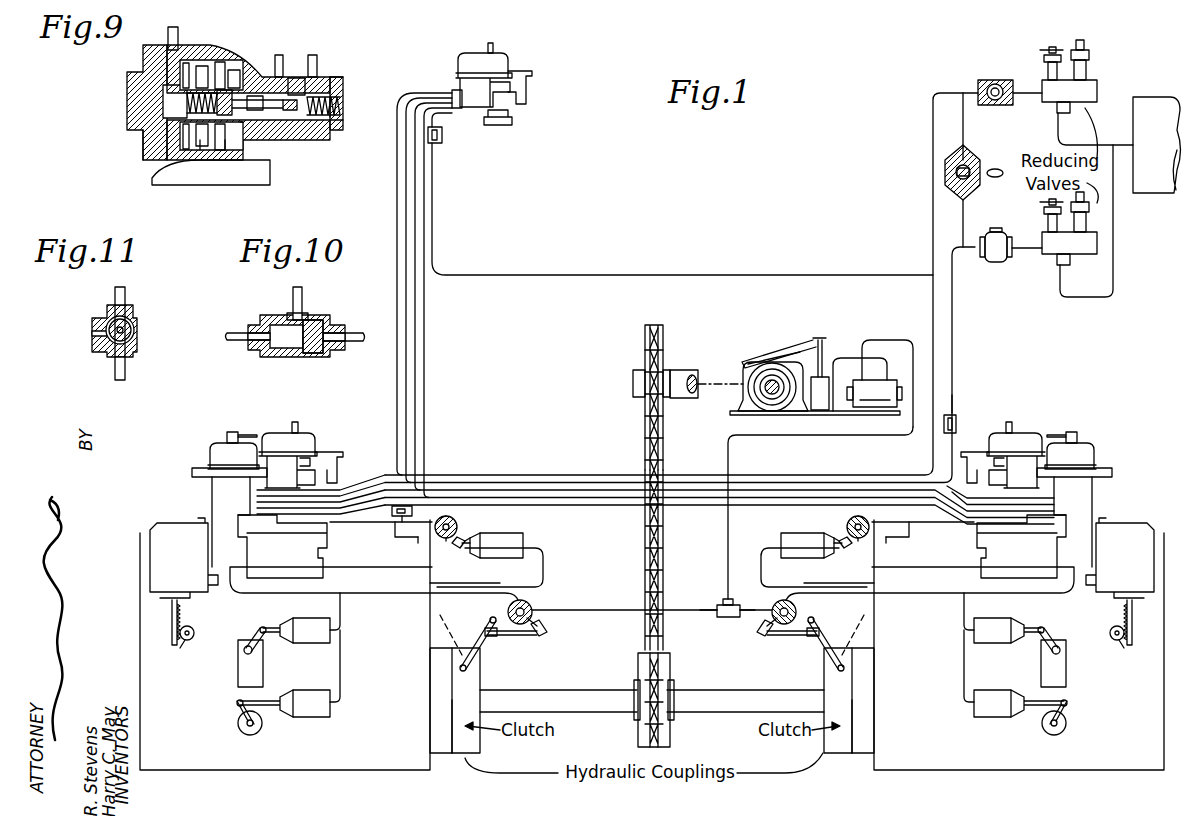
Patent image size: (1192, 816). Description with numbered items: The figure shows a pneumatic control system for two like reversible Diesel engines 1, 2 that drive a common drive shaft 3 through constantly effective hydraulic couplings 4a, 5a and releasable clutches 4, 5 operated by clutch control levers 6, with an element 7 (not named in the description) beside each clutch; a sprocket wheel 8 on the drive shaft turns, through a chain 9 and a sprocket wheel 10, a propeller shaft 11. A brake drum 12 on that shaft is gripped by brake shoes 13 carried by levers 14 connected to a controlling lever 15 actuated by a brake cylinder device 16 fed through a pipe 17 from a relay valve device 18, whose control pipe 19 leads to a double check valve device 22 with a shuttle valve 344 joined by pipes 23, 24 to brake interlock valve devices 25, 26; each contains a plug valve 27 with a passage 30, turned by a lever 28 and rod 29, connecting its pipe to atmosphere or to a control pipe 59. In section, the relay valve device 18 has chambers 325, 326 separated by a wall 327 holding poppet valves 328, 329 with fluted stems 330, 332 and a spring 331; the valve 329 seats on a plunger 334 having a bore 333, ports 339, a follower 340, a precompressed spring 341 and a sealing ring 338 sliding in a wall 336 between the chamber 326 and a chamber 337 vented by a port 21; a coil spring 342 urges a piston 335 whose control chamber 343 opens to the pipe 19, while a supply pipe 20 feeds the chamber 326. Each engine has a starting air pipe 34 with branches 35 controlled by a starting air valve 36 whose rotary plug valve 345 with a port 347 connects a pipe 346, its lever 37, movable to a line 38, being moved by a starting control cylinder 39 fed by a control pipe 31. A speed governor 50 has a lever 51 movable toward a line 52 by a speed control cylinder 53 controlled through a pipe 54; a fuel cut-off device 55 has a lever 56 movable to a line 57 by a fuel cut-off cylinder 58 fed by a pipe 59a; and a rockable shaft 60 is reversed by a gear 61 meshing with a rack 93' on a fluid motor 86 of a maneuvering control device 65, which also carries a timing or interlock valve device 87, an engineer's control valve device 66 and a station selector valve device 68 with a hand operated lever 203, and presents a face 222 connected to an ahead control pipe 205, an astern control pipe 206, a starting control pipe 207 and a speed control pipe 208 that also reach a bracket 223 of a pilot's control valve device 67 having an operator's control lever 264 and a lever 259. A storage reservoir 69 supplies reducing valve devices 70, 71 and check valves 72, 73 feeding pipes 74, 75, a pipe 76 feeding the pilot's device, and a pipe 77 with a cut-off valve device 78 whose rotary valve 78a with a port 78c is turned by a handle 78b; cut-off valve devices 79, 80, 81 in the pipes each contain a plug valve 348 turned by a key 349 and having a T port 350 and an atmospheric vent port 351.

In FIG. 1, the internal combustion engine 1 is at (440, 762).
In FIG. 1, the internal combustion engine 2 is at (868, 766).
In FIG. 1, the common drive shaft 3 is at (740, 713).
In FIG. 1, the releasable clutch 4 is at (478, 748).
In FIG. 1, the hydraulic coupling 4a is at (448, 722).
In FIG. 1, the releasable clutch 5 is at (823, 748).
In FIG. 1, the hydraulic coupling 5a is at (848, 740).
In FIG. 1, the clutch control lever 6 is at (485, 645).
In FIG. 1, the clutch housing 7 is at (455, 630).
In FIG. 1, the sprocket wheel 8 is at (671, 675).
In FIG. 1, the chain 9 is at (665, 536).
In FIG. 1, the sprocket wheel 10 is at (667, 340).
In FIG. 1, the propeller shaft 11 is at (695, 370).
In FIG. 1, the brake drum 12 is at (765, 411).
In FIG. 1, the brake shoes 13 is at (745, 395).
In FIG. 1, the levers 14 is at (800, 347).
In FIG. 1, the controlling lever 15 is at (818, 338).
In FIG. 1, the brake cylinder device 16 is at (828, 405).
In FIG. 9, the pipe 17 is at (279, 55).
In FIG. 1, the pipe 17 is at (845, 358).
In FIG. 9, the relay valve device 18 is at (155, 165).
In FIG. 1, the relay valve device 18 is at (890, 410).
In FIG. 9, the control pipe 19 is at (178, 30).
In FIG. 10, the control pipe 19 is at (302, 300).
In FIG. 1, the control pipe 19 is at (830, 436).
In FIG. 9, the fluid pressure supply pipe 20 is at (313, 55).
In FIG. 1, the fluid pressure supply pipe 20 is at (895, 357).
In FIG. 9, the port 21 is at (227, 90).
In FIG. 10, the double check valve device 22 is at (285, 348).
In FIG. 1, the double check valve device 22 is at (717, 612).
In FIG. 10, the pipe 23 is at (238, 342).
In FIG. 1, the pipe 23 is at (702, 612).
In FIG. 10, the pipe 24 is at (355, 342).
In FIG. 1, the pipe 24 is at (741, 612).
In FIG. 1, the brake interlock valve device 25 is at (533, 608).
In FIG. 1, the brake interlock valve device 26 is at (795, 608).
In FIG. 1, the rotary type plug valve 27 is at (512, 615).
In FIG. 1, the lever 28 is at (546, 634).
In FIG. 1, the rod 29 is at (522, 636).
In FIG. 1, the passage 30 is at (535, 617).
In FIG. 1, the control pipe 31 is at (532, 586).
In FIG. 1, the starting air pipe 34 is at (412, 512).
In FIG. 1, the branches 35 is at (424, 540).
In FIG. 1, the starting air valve 36 is at (455, 525).
In FIG. 1, the lever 37 is at (462, 548).
In FIG. 1, the dot and dash line 38 is at (446, 538).
In FIG. 1, the starting control cylinder 39 is at (510, 533).
In FIG. 1, the speed governor 50 is at (238, 678).
In FIG. 1, the governor control lever 51 is at (262, 628).
In FIG. 1, the dot and dash line 52 is at (240, 648).
In FIG. 1, the speed control cylinder 53 is at (295, 643).
In FIG. 1, the pipe 54 is at (343, 612).
In FIG. 1, the fuel cut-off device 55 is at (252, 735).
In FIG. 1, the lever 56 is at (240, 710).
In FIG. 1, the dot and dash line 57 is at (262, 708).
In FIG. 1, the fuel cut-off cylinder 58 is at (318, 690).
In FIG. 1, the control pipe 59 is at (405, 593).
In FIG. 1, the pipe 59a is at (340, 675).
In FIG. 1, the rockable shaft 60 is at (190, 627).
In FIG. 1, the gear 61 is at (184, 640).
In FIG. 1, the maneuvering control device 65 is at (212, 505).
In FIG. 1, the engineer's control valve device 66 is at (305, 433).
In FIG. 1, the pilot's control valve device 67 is at (508, 60).
In FIG. 1, the station selector valve device 68 is at (215, 443).
In FIG. 1, the storage reservoir 69 is at (1150, 97).
In FIG. 1, the reducing valve device 70 is at (1095, 85).
In FIG. 1, the reducing valve device 71 is at (1082, 258).
In FIG. 1, the check valve 72 is at (985, 82).
In FIG. 1, the check valve 73 is at (1000, 263).
In FIG. 1, the pipe 74 is at (933, 298).
In FIG. 1, the pipe 75 is at (952, 320).
In FIG. 1, the pipe 76 is at (795, 275).
In FIG. 1, the pipe 77 is at (963, 130).
In FIG. 1, the cut-off valve device 78 is at (946, 177).
In FIG. 1, the rotary valve 78a is at (970, 185).
In FIG. 1, the handle 78b is at (995, 168).
In FIG. 1, the port 78c is at (960, 160).
In FIG. 11, the cut-off valve device 79 is at (130, 350).
In FIG. 1, the cut-off valve device 79 is at (958, 414).
In FIG. 1, the cut-off valve device 80 is at (392, 511).
In FIG. 1, the cut-off valve device 81 is at (442, 133).
In FIG. 1, the fluid motor 86 is at (150, 530).
In FIG. 1, the timing or interlock valve device 87 is at (303, 565).
In FIG. 1, the rack 93' is at (638, 622).
In FIG. 1, the hand operated lever 203 is at (234, 432).
In FIG. 1, the ahead control pipe 205 is at (547, 490).
In FIG. 1, the astern control pipe 206 is at (506, 482).
In FIG. 1, the starting control pipe 207 is at (470, 475).
In FIG. 1, the speed control pipe 208 is at (593, 497).
In FIG. 1, the face 222 is at (262, 480).
In FIG. 1, the bracket 223 is at (452, 92).
In FIG. 1, the lever 259 is at (533, 88).
In FIG. 1, the operator's control lever 264 is at (492, 47).
In FIG. 9, the chamber 325 is at (335, 75).
In FIG. 9, the chamber 326 is at (292, 112).
In FIG. 9, the wall 327 is at (295, 78).
In FIG. 9, the poppet valve 328 is at (340, 100).
In FIG. 9, the poppet valve 329 is at (335, 125).
In FIG. 9, the fluted stem 330 is at (338, 110).
In FIG. 9, the spring 331 is at (343, 85).
In FIG. 9, the fluted stem 332 is at (270, 118).
In FIG. 9, the bore 333 is at (240, 125).
In FIG. 9, the plunger 334 is at (250, 125).
In FIG. 9, the piston 335 is at (180, 65).
In FIG. 9, the wall 336 is at (255, 95).
In FIG. 9, the chamber 337 is at (200, 90).
In FIG. 9, the sealing ring 338 is at (240, 85).
In FIG. 9, the ports 339 is at (225, 150).
In FIG. 9, the follower 340 is at (210, 150).
In FIG. 9, the precompressed spring 341 is at (163, 107).
In FIG. 9, the coil spring 342 is at (160, 140).
In FIG. 9, the control chamber 343 is at (147, 98).
In FIG. 10, the shuttle valve 344 is at (308, 352).
In FIG. 1, the rotary plug valve 345 is at (650, 559).
In FIG. 1, the pipe 346 is at (468, 537).
In FIG. 1, the port 347 is at (440, 518).
In FIG. 11, the rotary plug valve 348 is at (110, 342).
In FIG. 1, the key 349 is at (400, 516).
In FIG. 11, the T port 350 is at (130, 318).
In FIG. 11, the atmospheric vent port 351 is at (92, 330).